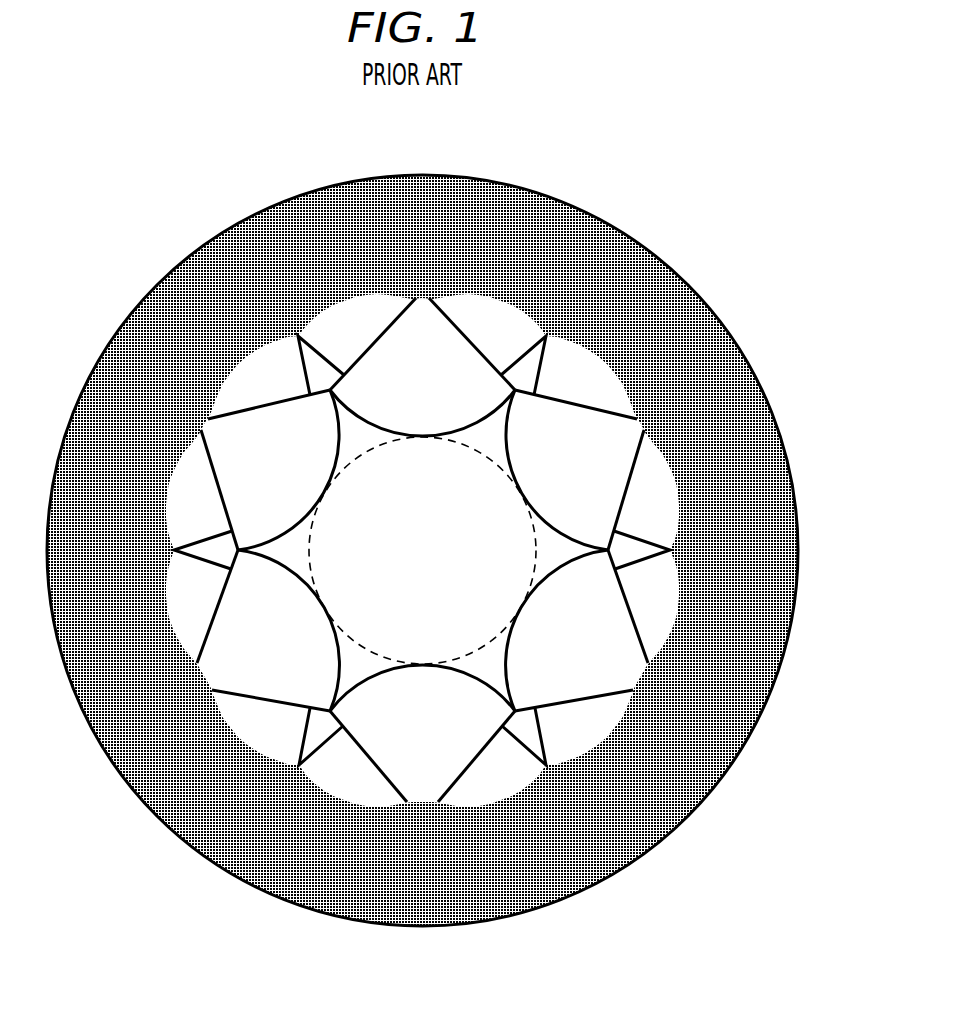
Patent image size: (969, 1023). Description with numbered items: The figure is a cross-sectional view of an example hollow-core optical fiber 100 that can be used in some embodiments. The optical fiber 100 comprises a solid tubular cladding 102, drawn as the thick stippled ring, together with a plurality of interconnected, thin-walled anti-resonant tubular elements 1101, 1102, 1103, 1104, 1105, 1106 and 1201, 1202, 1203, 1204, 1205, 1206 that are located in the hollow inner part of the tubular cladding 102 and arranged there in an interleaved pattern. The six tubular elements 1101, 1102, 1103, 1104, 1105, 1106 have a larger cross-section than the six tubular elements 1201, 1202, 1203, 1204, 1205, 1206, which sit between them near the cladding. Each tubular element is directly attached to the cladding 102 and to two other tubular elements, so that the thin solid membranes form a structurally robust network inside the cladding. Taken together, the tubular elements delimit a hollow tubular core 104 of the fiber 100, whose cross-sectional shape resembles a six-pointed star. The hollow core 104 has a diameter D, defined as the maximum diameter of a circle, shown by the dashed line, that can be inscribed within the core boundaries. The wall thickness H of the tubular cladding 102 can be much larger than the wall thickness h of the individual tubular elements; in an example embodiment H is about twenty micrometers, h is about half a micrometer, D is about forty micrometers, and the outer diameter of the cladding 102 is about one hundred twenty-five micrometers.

The hollow-core optical fiber 100 is at (432, 132).
The tubular cladding 102 is at (567, 222).
The hollow tubular core 104 is at (460, 609).
The anti-resonant tubular element 1101 is at (270, 470).
The anti-resonant tubular element 1102 is at (422, 367).
The anti-resonant tubular element 1103 is at (575, 470).
The anti-resonant tubular element 1104 is at (577, 630).
The anti-resonant tubular element 1105 is at (422, 733).
The anti-resonant tubular element 1106 is at (268, 630).
The anti-resonant tubular element 1201 is at (201, 533).
The anti-resonant tubular element 1202 is at (288, 370).
The anti-resonant tubular element 1203 is at (504, 351).
The anti-resonant tubular element 1204 is at (649, 533).
The anti-resonant tubular element 1205 is at (556, 736).
The anti-resonant tubular element 1206 is at (343, 755).
The core diameter D is at (537, 551).
The wall thickness of tubular elements h is at (488, 794).
The wall thickness of tubular cladding H is at (422, 803).